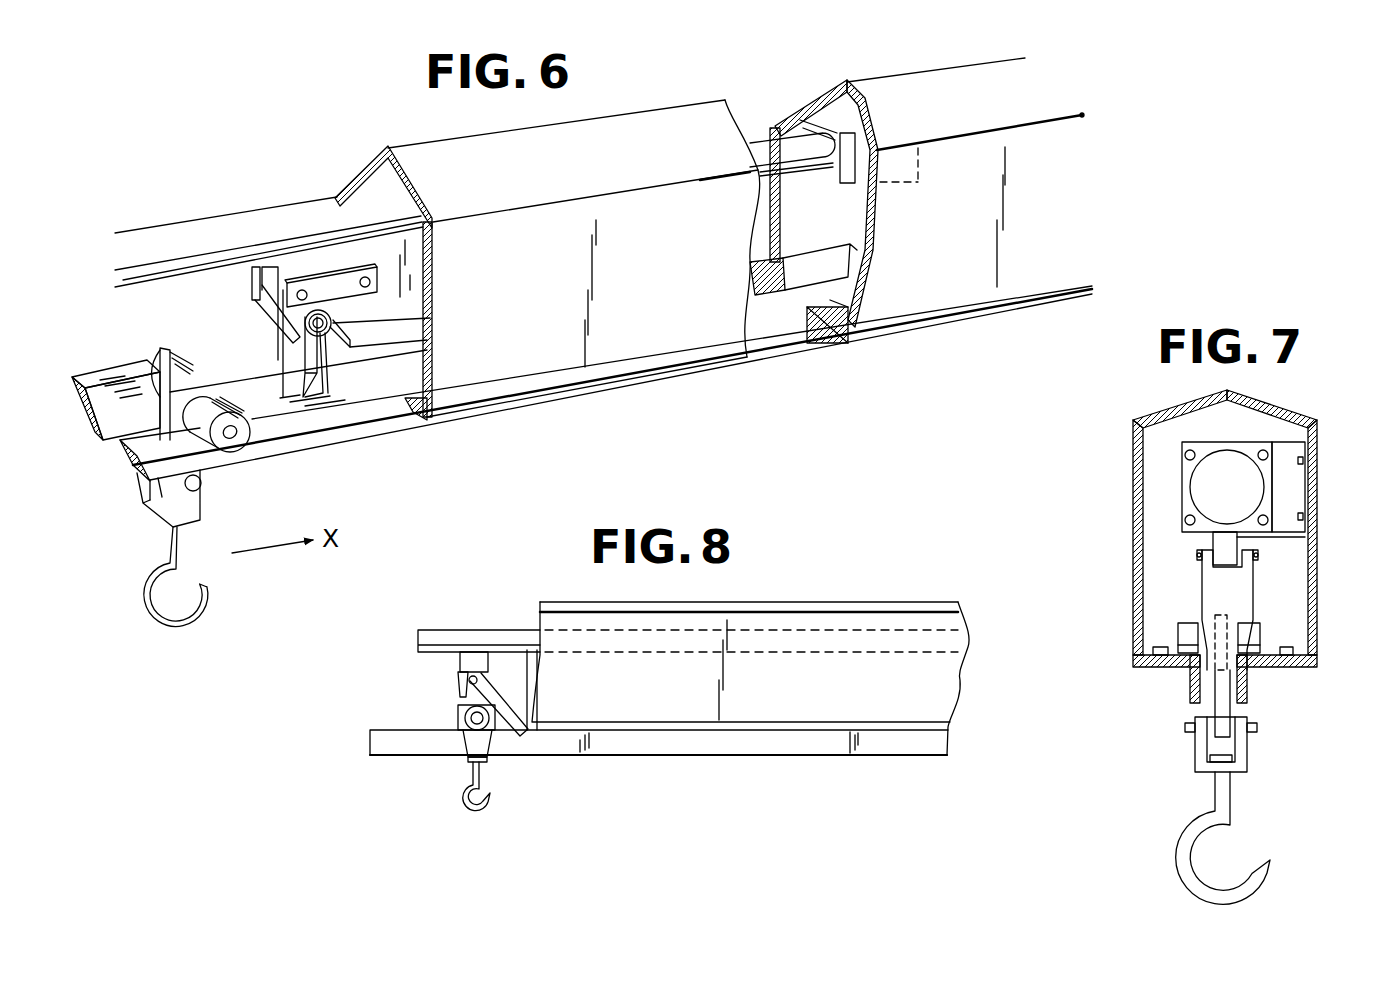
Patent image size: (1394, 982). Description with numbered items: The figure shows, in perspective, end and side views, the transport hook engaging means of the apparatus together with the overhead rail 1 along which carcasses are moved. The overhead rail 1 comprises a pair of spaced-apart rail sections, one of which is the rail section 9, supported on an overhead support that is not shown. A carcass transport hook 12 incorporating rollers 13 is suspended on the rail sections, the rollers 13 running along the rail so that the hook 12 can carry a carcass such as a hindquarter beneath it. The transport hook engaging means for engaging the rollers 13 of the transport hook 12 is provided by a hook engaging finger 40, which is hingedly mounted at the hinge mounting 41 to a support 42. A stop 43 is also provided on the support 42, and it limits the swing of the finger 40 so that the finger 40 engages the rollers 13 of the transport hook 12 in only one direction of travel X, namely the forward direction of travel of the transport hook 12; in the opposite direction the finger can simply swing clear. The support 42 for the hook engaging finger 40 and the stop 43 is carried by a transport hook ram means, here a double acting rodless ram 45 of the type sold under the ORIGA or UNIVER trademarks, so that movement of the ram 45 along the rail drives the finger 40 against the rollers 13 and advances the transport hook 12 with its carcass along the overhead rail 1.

In FIG. 6, the overhead rail 1 is at (113, 533).
In FIG. 6, the rail section 9 is at (103, 440).
In FIG. 6, the carcass transport hook 12 is at (173, 630).
In FIG. 8, the carcass transport hook 12 is at (478, 813).
In FIG. 6, the rollers 13 is at (247, 437).
In FIG. 7, the rollers 13 is at (1252, 636).
In FIG. 8, the rollers 13 is at (476, 717).
In FIG. 6, the hook engaging finger 40 is at (287, 370).
In FIG. 7, the hook engaging finger 40 is at (1240, 584).
In FIG. 8, the hook engaging finger 40 is at (510, 702).
In FIG. 6, the hinge mounting 41 is at (340, 320).
In FIG. 6, the support 42 is at (270, 273).
In FIG. 7, the support 42 is at (1220, 543).
In FIG. 8, the support 42 is at (463, 658).
In FIG. 6, the stop 43 is at (270, 317).
In FIG. 8, the stop 43 is at (457, 683).
In FIG. 6, the double acting rodless ram 45 is at (207, 228).
In FIG. 7, the double acting rodless ram 45 is at (1212, 487).
In FIG. 8, the double acting rodless ram 45 is at (468, 632).